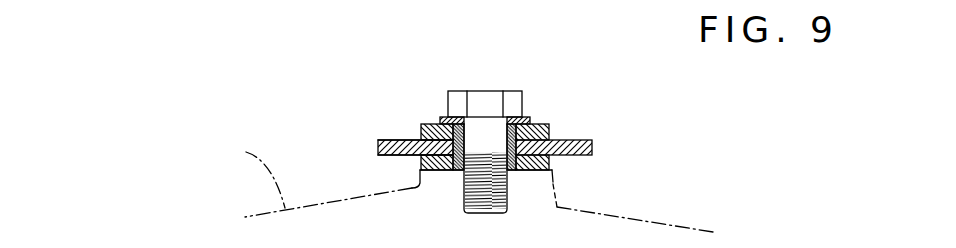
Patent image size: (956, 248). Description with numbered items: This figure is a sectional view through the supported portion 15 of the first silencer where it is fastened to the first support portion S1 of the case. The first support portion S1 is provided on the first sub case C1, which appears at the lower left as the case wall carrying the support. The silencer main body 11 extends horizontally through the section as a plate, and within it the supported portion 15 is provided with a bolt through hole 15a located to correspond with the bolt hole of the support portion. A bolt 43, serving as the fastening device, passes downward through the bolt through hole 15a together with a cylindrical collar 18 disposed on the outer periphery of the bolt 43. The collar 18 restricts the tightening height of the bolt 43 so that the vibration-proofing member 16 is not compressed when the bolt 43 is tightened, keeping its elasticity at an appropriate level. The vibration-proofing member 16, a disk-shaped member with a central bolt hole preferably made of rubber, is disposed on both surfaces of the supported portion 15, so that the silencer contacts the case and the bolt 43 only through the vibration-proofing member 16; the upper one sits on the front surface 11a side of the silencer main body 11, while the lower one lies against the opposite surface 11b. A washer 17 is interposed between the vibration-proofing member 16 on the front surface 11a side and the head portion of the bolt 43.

The silencer main body 11 is at (593, 147).
The front surface 11a is at (392, 140).
The lower surface of plate 11b is at (390, 156).
The supported portion 15 is at (418, 138).
The bolt through hole 15a is at (466, 170).
The vibration-proofing member 16 is at (549, 125).
The washer 17 is at (443, 117).
The collar 18 is at (538, 121).
The bolt 43 is at (488, 98).
The first sub case C1 is at (292, 179).
The first support portion S1 is at (555, 183).